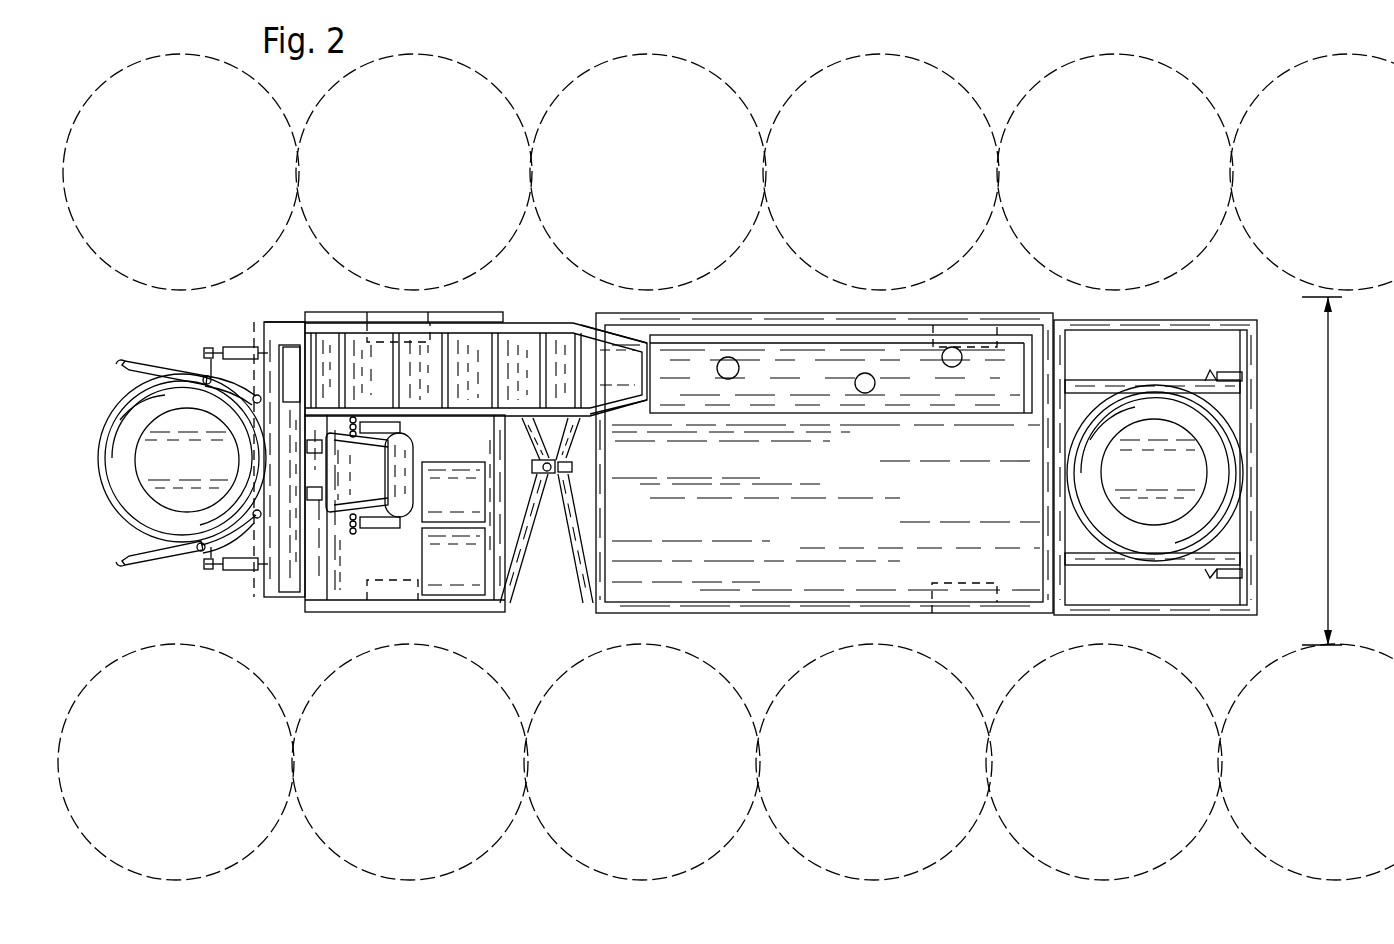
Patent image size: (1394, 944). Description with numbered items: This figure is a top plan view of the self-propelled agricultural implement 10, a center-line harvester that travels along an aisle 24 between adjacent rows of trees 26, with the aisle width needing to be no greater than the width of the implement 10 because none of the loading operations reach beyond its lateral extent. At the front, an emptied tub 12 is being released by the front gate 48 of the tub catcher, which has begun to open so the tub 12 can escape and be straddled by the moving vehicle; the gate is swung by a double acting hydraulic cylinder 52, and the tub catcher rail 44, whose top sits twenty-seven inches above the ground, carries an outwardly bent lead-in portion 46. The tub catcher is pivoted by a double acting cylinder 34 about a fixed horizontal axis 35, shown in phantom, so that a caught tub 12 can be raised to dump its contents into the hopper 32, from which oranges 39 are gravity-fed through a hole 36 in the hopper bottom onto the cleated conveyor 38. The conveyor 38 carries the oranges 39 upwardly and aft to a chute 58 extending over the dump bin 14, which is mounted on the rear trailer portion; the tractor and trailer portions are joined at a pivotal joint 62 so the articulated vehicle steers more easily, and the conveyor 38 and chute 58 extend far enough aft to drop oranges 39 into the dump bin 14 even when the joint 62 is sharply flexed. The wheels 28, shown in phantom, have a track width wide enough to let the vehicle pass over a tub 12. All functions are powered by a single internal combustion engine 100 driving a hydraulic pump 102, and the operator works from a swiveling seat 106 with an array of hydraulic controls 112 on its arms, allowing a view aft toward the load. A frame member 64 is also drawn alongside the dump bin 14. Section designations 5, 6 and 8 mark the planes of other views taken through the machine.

The self-propelled agricultural implement 10 is at (160, 300).
The tub 12 is at (195, 462).
The dump bin 14 is at (792, 495).
The aisle 24 is at (1342, 492).
The rows of trees 26 is at (158, 174).
The wheels 28 is at (370, 320).
The hopper 32 is at (263, 479).
The double acting cylinder 34 is at (250, 352).
The fixed horizontal axis 35 is at (252, 322).
The hole 36 is at (295, 352).
The cleated conveyor 38 is at (465, 347).
The oranges 39 is at (942, 360).
The tub catcher rail 44 is at (187, 366).
The lead-in portion 46 is at (134, 364).
The front gate 48 is at (228, 348).
The double acting hydraulic cylinder 52 is at (1233, 372).
The chute 58 is at (613, 352).
The pivotal joint 62 is at (552, 475).
The hopper beam 64 is at (792, 352).
The internal combustion engine 100 is at (435, 572).
The hydraulic pump 102 is at (435, 505).
The swiveling seat 106 is at (365, 463).
The hydraulic controls 112 is at (352, 416).
The section line 5- 5 is at (1032, 470).
The section line 6- 6 is at (1127, 367).
The section line 8- 8 is at (1152, 547).